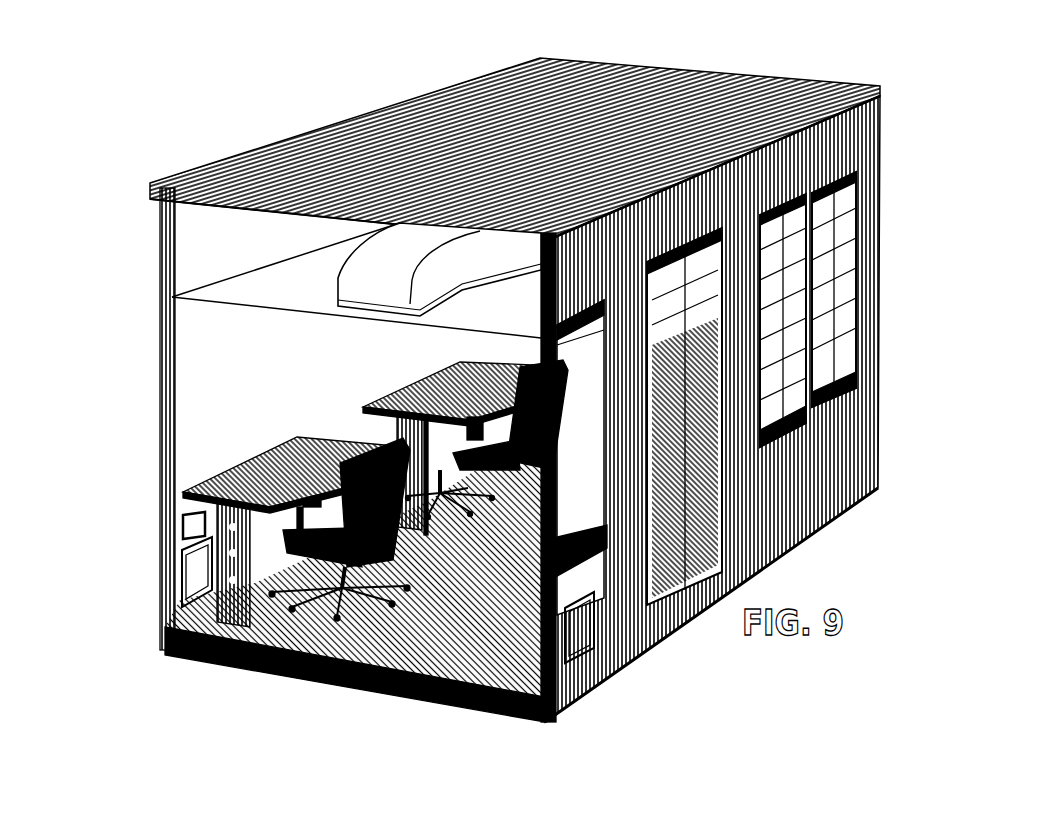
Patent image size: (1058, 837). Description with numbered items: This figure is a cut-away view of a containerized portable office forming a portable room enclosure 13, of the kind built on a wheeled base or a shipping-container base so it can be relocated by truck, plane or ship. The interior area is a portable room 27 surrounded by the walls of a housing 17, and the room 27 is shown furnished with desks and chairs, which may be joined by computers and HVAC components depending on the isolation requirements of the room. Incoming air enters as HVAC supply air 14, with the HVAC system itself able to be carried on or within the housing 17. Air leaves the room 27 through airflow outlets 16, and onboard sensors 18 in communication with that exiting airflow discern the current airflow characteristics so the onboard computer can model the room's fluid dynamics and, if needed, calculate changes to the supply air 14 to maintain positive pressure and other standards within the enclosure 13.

The portable room enclosure 13 is at (461, 369).
The HVAC supply air 14 is at (498, 357).
The airflow outlets 16 is at (193, 573).
The housing 17 is at (160, 267).
The onboard sensors 18 is at (183, 517).
The portable room 27 is at (230, 377).